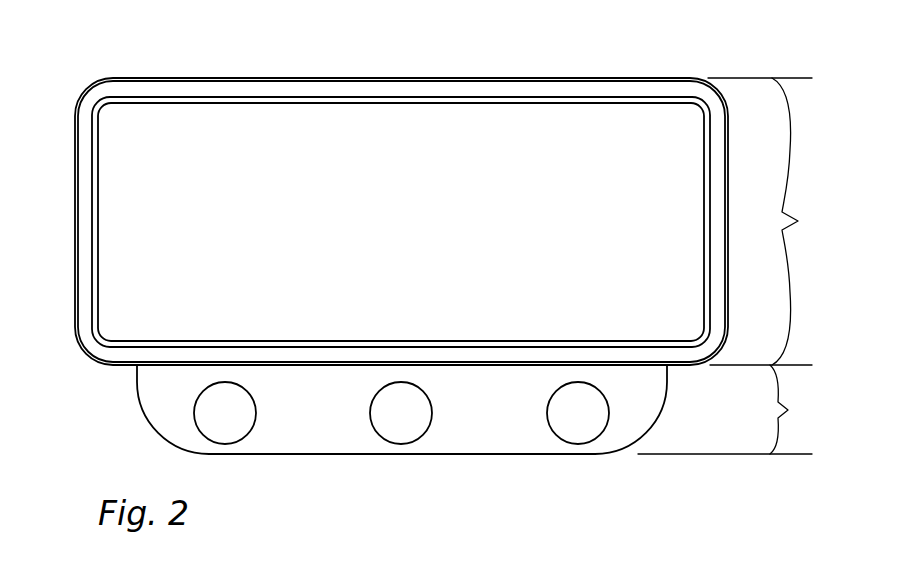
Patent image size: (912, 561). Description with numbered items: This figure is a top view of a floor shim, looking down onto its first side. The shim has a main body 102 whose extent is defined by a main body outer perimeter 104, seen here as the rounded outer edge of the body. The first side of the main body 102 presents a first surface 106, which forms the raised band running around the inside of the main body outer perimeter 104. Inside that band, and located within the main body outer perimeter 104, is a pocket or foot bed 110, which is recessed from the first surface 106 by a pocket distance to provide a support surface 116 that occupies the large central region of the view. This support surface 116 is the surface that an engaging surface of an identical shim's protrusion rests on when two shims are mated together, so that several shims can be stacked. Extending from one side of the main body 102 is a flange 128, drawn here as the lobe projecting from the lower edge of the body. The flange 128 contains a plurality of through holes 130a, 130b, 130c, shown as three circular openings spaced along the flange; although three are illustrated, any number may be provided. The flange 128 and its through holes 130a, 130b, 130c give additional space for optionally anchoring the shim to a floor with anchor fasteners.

The main body 102 is at (775, 221).
The main body outer perimeter 104 is at (282, 77).
The first surface 106 is at (393, 90).
The pocket or foot bed 110 is at (618, 102).
The support surface 116 is at (408, 220).
The flange 128 is at (484, 409).
The through hole 130a is at (223, 445).
The through hole 130b is at (393, 445).
The through hole 130c is at (573, 443).